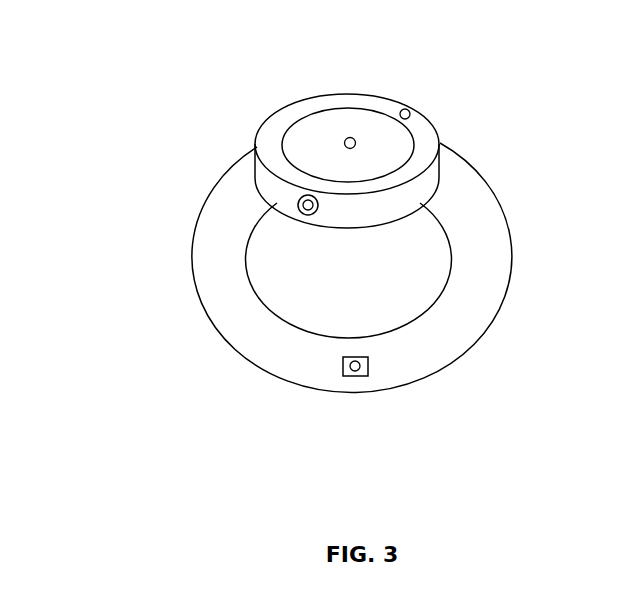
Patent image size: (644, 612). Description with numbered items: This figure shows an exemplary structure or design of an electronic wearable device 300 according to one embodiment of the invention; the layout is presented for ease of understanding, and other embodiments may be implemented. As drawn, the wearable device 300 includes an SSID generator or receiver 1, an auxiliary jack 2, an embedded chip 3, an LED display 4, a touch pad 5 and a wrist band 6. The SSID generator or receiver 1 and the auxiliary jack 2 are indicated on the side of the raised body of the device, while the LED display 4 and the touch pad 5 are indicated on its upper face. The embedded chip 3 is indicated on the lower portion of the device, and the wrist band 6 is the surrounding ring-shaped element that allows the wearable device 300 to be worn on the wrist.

The wearable device 300 is at (66, 124).
The SSID generator or receiver 1 is at (257, 176).
The auxiliary jack 2 is at (298, 206).
The embedded chip 3 is at (343, 366).
The LED display 4 is at (410, 114).
The touch pad 5 is at (356, 143).
The wrist band 6 is at (475, 300).